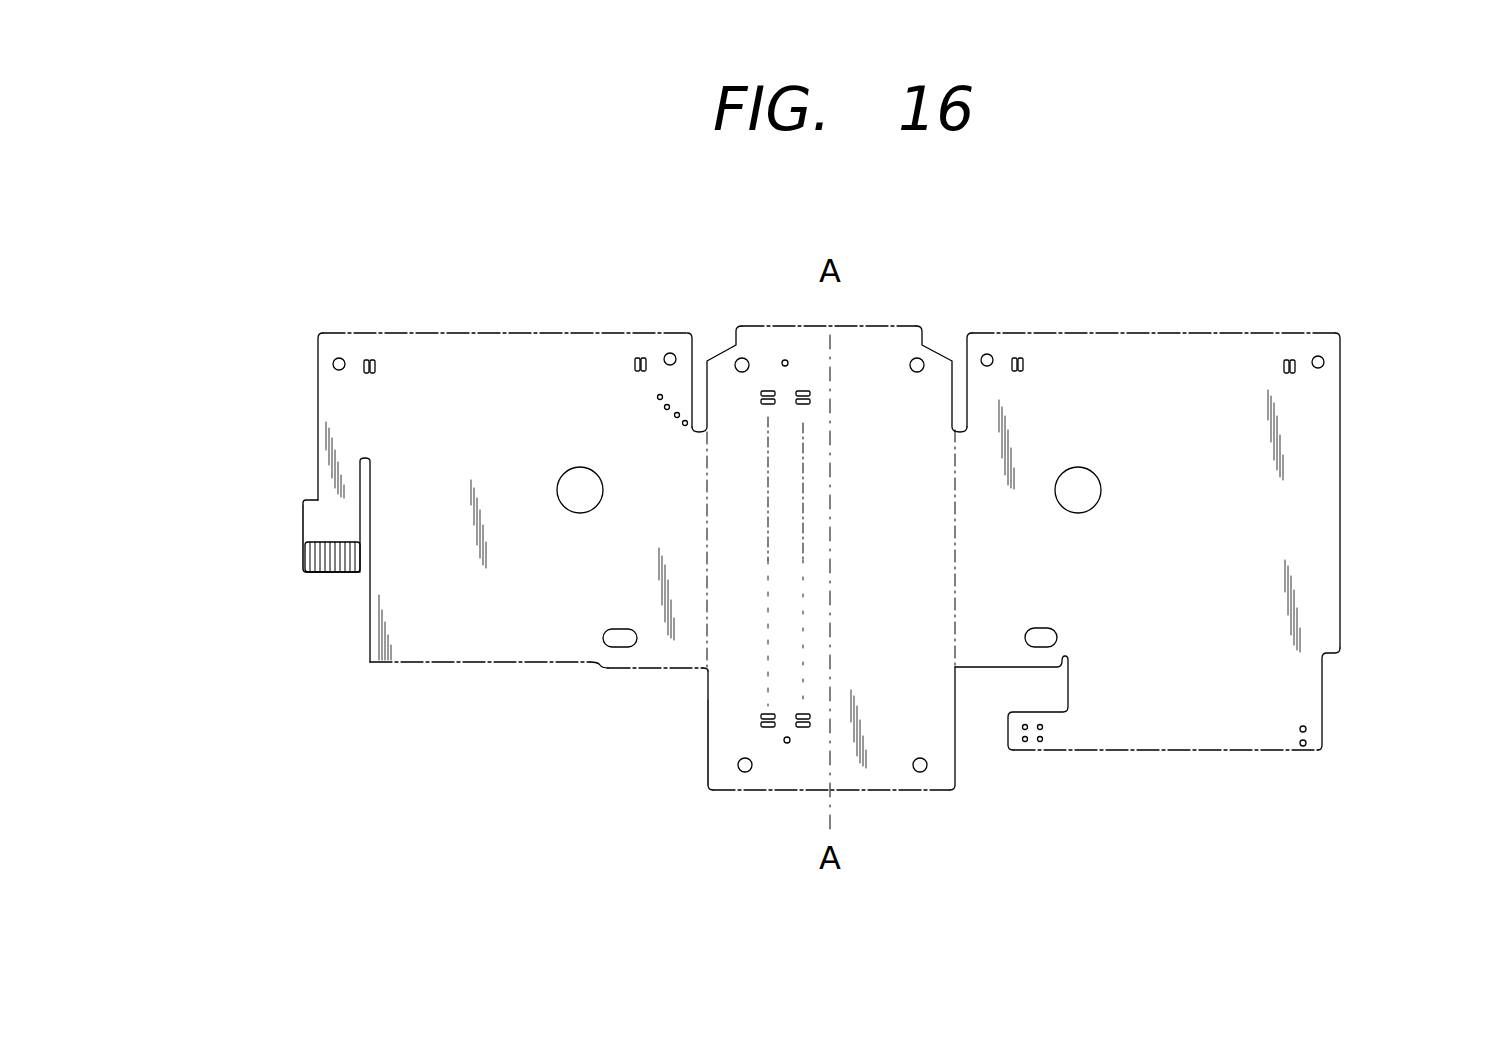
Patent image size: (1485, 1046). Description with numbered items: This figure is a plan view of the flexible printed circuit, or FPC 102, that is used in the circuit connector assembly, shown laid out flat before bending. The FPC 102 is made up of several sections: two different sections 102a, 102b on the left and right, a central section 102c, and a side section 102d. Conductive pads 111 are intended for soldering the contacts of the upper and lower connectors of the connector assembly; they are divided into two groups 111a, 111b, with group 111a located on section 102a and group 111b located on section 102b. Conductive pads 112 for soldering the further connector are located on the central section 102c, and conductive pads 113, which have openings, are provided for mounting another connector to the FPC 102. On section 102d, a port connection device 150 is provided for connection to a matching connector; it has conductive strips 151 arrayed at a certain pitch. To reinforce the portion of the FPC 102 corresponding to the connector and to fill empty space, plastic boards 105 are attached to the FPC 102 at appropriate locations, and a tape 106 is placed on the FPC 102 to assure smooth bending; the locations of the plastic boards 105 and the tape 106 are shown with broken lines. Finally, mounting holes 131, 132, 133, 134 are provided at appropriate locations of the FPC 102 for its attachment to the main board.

The flexible printed circuit (FPC) 102 is at (899, 558).
The section of the FPC 102a is at (533, 528).
The section of the FPC 102b is at (1149, 521).
The section of the FPC 102c is at (831, 564).
The section of the FPC 102d is at (270, 542).
The plastic boards 105 is at (352, 342).
The tape 106 is at (1327, 690).
The conductive pads 111 is at (375, 360).
The group of conductive pads 111a is at (615, 348).
The group of conductive pads 111b is at (1145, 352).
The conductive pads 112 is at (708, 742).
The conductive pads 113 is at (1307, 747).
The mounting hole 131 is at (608, 643).
The mounting hole 132 is at (672, 352).
The mounting hole 133 is at (742, 372).
The mounting hole 134 is at (575, 485).
The port connection device 150 is at (335, 530).
The conductive strips 151 is at (307, 573).